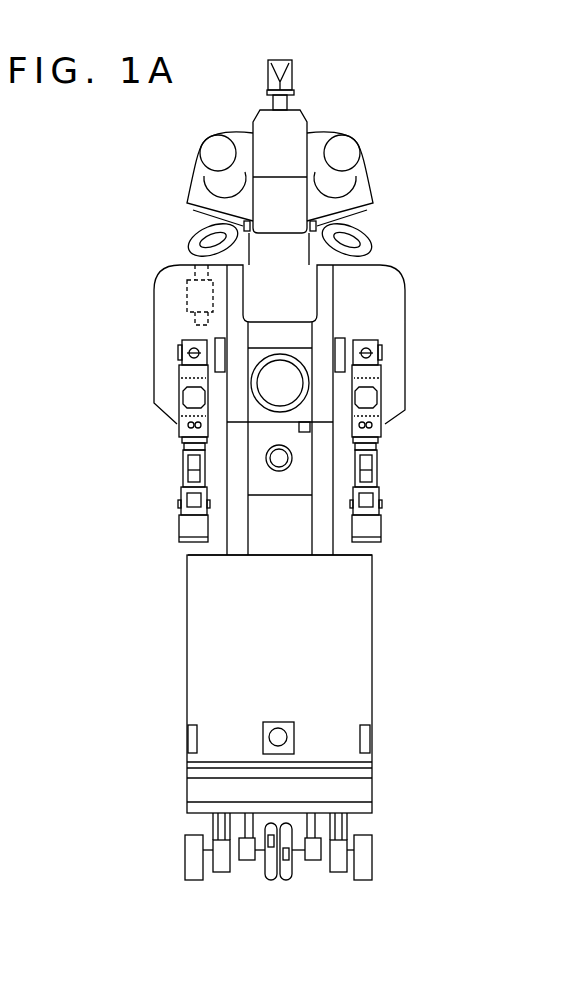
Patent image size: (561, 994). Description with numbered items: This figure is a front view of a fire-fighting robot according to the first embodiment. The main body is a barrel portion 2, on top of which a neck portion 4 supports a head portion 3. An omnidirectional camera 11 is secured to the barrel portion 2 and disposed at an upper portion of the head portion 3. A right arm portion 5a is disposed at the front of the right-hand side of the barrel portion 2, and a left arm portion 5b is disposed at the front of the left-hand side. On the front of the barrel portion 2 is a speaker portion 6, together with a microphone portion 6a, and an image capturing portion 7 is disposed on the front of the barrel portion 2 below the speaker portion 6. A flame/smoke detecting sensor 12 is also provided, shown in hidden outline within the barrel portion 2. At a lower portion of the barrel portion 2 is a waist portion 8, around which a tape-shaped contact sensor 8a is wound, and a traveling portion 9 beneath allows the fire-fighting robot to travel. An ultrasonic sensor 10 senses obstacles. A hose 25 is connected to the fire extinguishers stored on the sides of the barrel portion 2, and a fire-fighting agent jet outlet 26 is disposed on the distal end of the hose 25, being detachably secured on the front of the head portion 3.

The barrel portion 2 is at (410, 320).
The head portion 3 is at (378, 157).
The neck portion 4 is at (313, 259).
The right arm portion 5a is at (172, 402).
The left arm portion 5b is at (386, 393).
The speaker portion 6 is at (284, 383).
The microphone portion 6a is at (310, 428).
The image capturing portion 7 is at (290, 458).
The waist portion 8 is at (152, 780).
The tape-shaped contact sensor 8a is at (348, 775).
The traveling portion 9 is at (176, 832).
The ultrasonic sensor 10 is at (188, 738).
The omnidirectional camera 11 is at (286, 67).
The flame/smoke detecting sensor 12 is at (197, 295).
The hose 25 is at (373, 238).
The fire-fighting agent jet outlet 26 is at (368, 212).